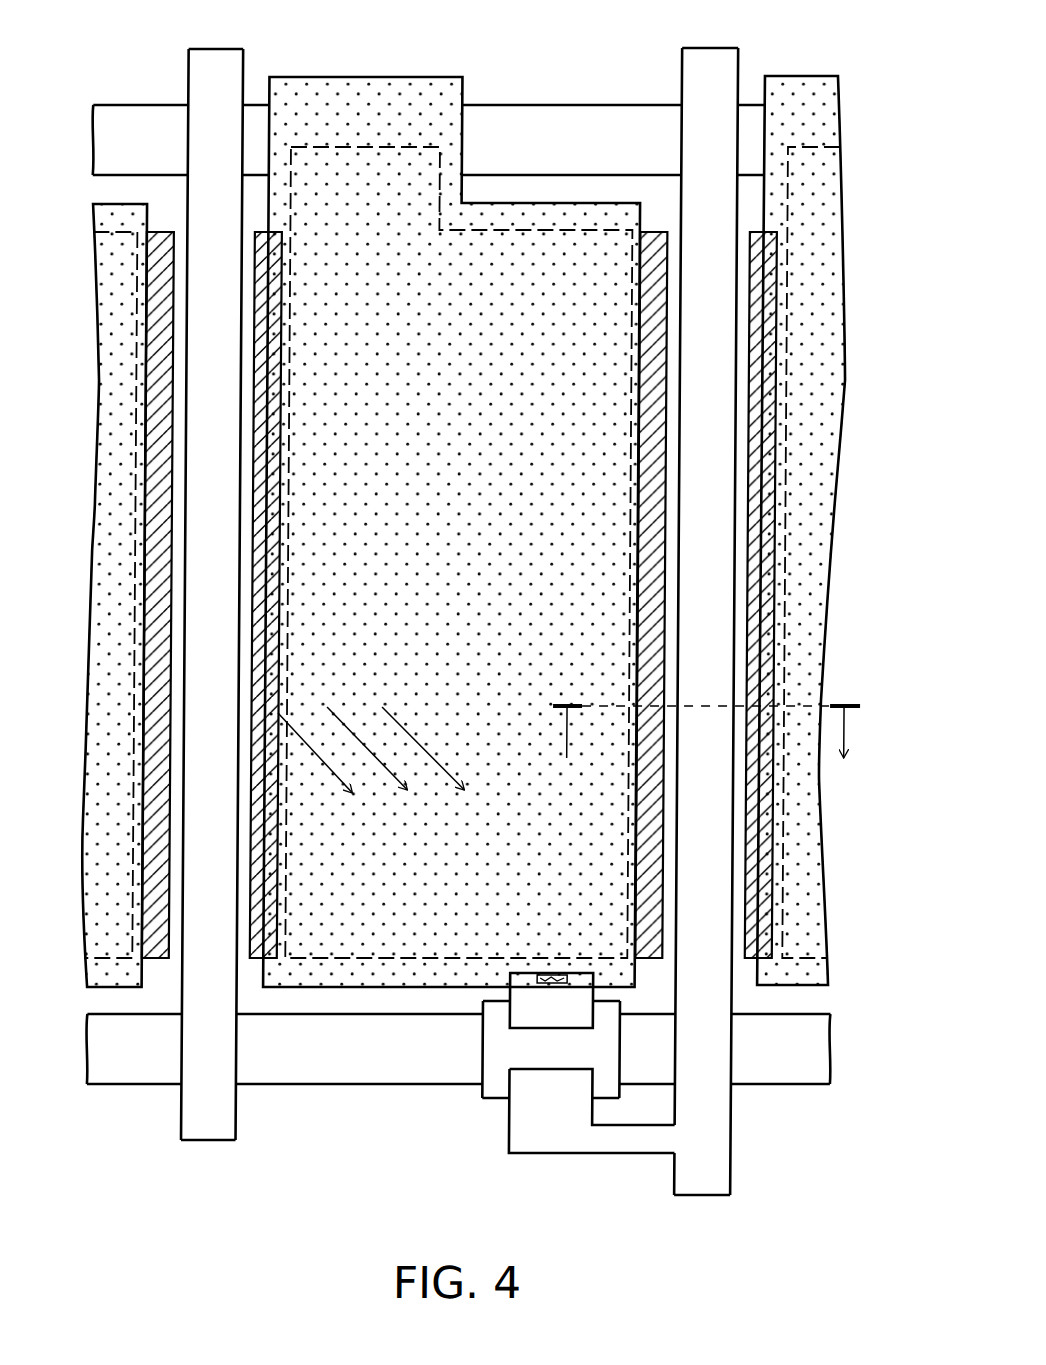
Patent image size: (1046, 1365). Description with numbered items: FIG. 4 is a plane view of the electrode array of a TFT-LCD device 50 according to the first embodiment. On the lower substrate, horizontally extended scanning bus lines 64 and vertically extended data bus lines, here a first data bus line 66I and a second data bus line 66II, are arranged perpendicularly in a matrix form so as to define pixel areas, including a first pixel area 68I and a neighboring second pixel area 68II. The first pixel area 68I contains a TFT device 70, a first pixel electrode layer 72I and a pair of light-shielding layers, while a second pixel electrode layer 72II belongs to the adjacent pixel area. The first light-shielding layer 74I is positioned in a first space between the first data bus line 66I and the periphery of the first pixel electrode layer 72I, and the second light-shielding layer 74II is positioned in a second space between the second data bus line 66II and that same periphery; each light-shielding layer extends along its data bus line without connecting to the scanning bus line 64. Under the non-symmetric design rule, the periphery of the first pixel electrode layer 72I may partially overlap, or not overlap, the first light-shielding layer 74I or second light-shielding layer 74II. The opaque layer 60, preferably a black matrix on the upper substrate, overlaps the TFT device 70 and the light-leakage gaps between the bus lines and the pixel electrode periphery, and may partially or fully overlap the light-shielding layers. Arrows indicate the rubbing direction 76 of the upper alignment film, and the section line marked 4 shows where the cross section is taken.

The TFT-LCD device 50 is at (794, 1108).
The opaque layer 60 is at (360, 147).
The scanning bus line 64 is at (140, 113).
The first data bus line 66I is at (711, 1187).
The second data bus line 66II is at (218, 1130).
The first pixel area 68I is at (544, 193).
The second pixel area 68II is at (751, 193).
The TFT device 70 is at (506, 1108).
The first pixel electrode layer 72I is at (440, 566).
The second pixel electrode layer 72II is at (819, 87).
The first light-shielding layer 74I is at (656, 550).
The second light-shielding layer 74II is at (161, 552).
The rubbing direction 76 is at (418, 730).
The section line 4- 4 is at (706, 749).